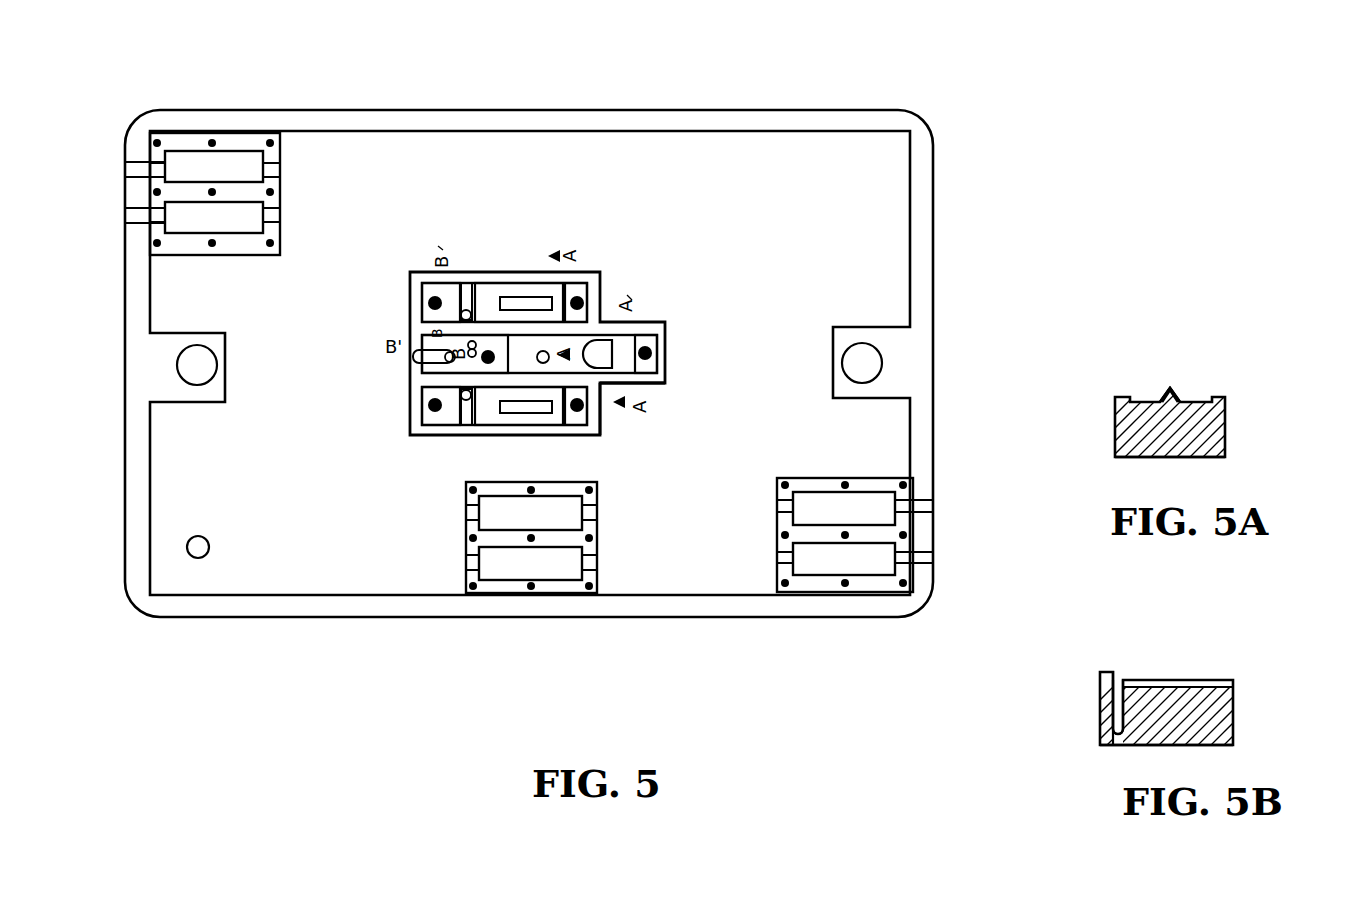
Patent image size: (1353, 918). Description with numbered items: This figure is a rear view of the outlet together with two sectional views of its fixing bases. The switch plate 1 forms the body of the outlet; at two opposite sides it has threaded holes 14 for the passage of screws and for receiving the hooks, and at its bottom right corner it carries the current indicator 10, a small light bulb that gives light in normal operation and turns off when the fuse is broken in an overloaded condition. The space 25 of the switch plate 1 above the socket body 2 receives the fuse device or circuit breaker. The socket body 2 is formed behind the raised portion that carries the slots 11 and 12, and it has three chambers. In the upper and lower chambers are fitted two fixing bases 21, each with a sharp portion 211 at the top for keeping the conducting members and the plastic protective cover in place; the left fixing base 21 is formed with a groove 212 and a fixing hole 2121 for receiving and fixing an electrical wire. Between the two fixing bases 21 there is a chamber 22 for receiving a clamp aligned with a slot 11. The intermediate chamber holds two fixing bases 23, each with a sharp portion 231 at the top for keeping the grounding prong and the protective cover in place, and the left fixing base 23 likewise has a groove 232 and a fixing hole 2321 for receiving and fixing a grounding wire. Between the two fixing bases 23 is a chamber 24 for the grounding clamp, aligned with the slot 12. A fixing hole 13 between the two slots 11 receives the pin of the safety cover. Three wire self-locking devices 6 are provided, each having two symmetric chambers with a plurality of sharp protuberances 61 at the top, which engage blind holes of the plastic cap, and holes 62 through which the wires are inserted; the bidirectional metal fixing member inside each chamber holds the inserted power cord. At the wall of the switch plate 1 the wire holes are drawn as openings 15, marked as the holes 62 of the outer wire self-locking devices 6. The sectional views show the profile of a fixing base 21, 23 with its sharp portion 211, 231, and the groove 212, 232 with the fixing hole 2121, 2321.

In FIG. 5, the switch plate 1 is at (933, 170).
In FIG. 5, the socket body 2 is at (600, 272).
In FIG. 5, the wire self-locking device 6 is at (185, 130).
In FIG. 5, the current indicator 10 is at (198, 558).
In FIG. 5, the slot 11 is at (538, 298).
In FIG. 5, the slot 12 is at (606, 392).
In FIG. 5, the fixing hole 13 is at (540, 365).
In FIG. 5, the threaded hole 14 is at (197, 365).
In FIG. 5, the tab 15 is at (125, 214).
In FIG. 5, the fixing base 21 is at (423, 292).
In FIG. 5A, the fixing base 21 is at (1210, 435).
In FIG. 5B, the fixing base 21 is at (1220, 725).
In FIG. 5, the chamber 22 is at (513, 288).
In FIG. 5, the fixing base 23 is at (653, 340).
In FIG. 5A, the fixing base 23 is at (1217, 436).
In FIG. 5B, the fixing base 23 is at (1219, 729).
In FIG. 5, the chamber 24 is at (622, 392).
In FIG. 5, the space 25 is at (845, 160).
In FIG. 5, the sharp protuberance 61 is at (270, 143).
In FIG. 5, the hole 62 is at (281, 212).
In FIG. 5, the sharp portion 211 is at (423, 272).
In FIG. 5A, the sharp portion 211 is at (1172, 392).
In FIG. 5, the groove 212 is at (467, 288).
In FIG. 5B, the groove 212 is at (1215, 686).
In FIG. 5, the sharp portion 231 is at (489, 352).
In FIG. 5A, the sharp portion 231 is at (1224, 366).
In FIG. 5, the groove 232 is at (440, 364).
In FIG. 5B, the groove 232 is at (1229, 650).
In FIG. 5, the fixing hole 2121 is at (460, 317).
In FIG. 5B, the fixing hole 2121 is at (1120, 690).
In FIG. 5, the fixing hole 2321 is at (413, 330).
In FIG. 5B, the fixing hole 2321 is at (1160, 683).